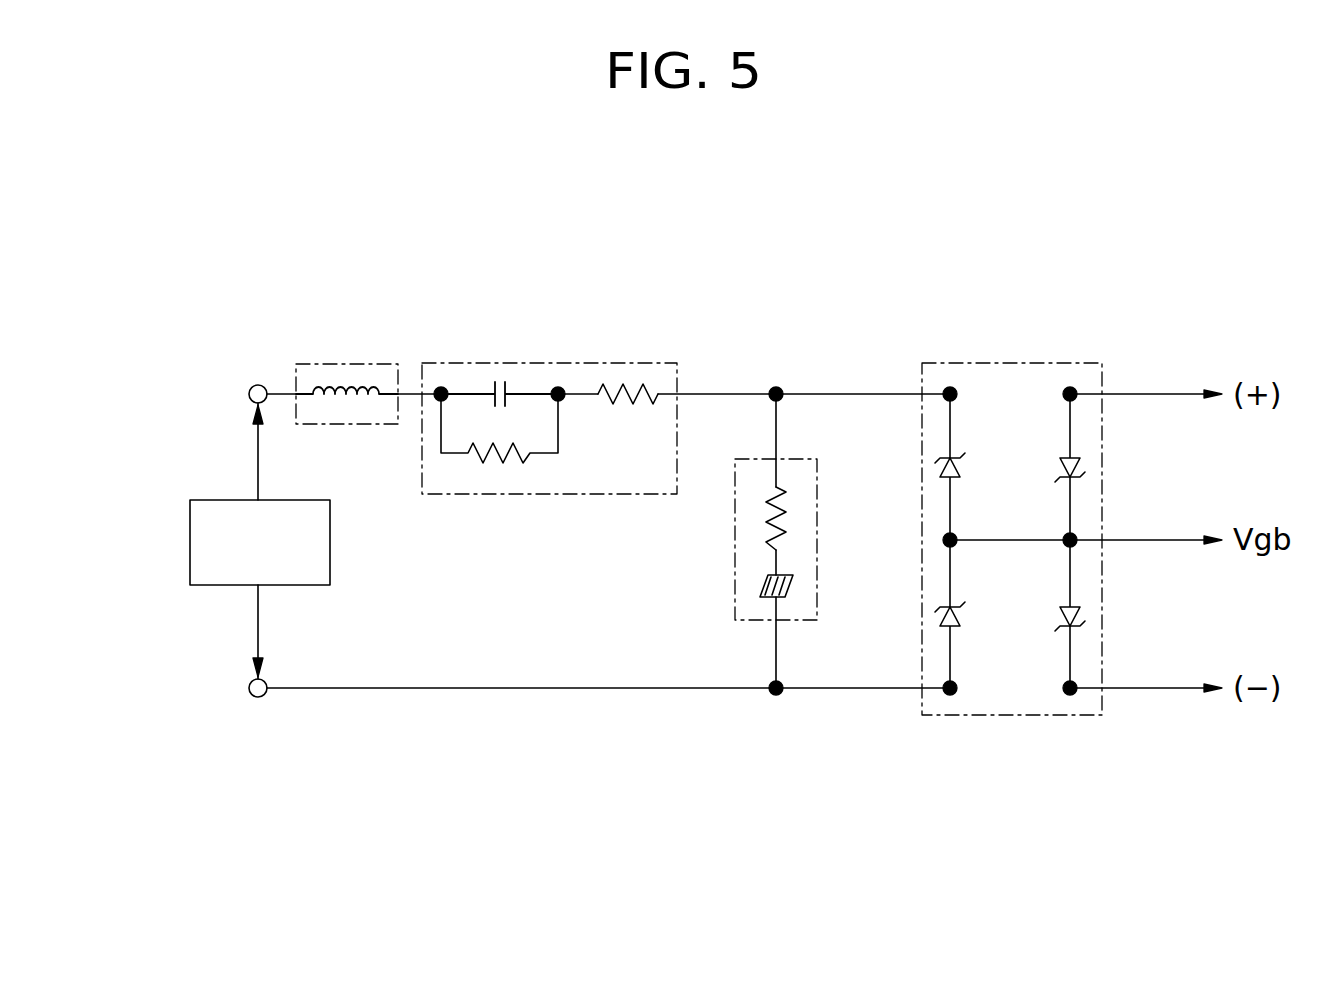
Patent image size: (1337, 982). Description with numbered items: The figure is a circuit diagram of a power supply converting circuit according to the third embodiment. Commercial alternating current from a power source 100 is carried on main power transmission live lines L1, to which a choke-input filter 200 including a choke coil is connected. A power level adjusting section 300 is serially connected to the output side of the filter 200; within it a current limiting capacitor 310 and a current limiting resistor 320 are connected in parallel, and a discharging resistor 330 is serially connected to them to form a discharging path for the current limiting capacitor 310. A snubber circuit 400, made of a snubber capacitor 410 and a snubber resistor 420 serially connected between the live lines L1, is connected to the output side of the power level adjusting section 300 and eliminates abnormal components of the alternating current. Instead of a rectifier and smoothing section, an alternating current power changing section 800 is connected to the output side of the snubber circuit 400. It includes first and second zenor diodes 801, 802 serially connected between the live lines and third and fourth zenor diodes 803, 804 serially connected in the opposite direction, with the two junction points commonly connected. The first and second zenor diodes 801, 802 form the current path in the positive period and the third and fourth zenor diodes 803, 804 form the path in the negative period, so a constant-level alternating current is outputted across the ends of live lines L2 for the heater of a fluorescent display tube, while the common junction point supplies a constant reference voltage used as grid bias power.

The power source 100 is at (223, 498).
The live lines L1 is at (281, 392).
The live lines L2 is at (1180, 392).
The choke-input filter 200 is at (349, 363).
The power level adjusting section 300 is at (549, 423).
The current limiting capacitor 310 is at (498, 380).
The current limiting resistor 320 is at (484, 463).
The discharging resistor 330 is at (645, 378).
The snubber circuit 400 is at (750, 526).
The snubber capacitor 410 is at (790, 600).
The snubber resistor 420 is at (785, 513).
The alternating current power changing section 800 is at (1013, 546).
The first zenor diode 801 is at (945, 468).
The second zenor diode 802 is at (947, 614).
The third zenor diode 803 is at (1080, 470).
The fourth zenor diode 804 is at (1085, 620).